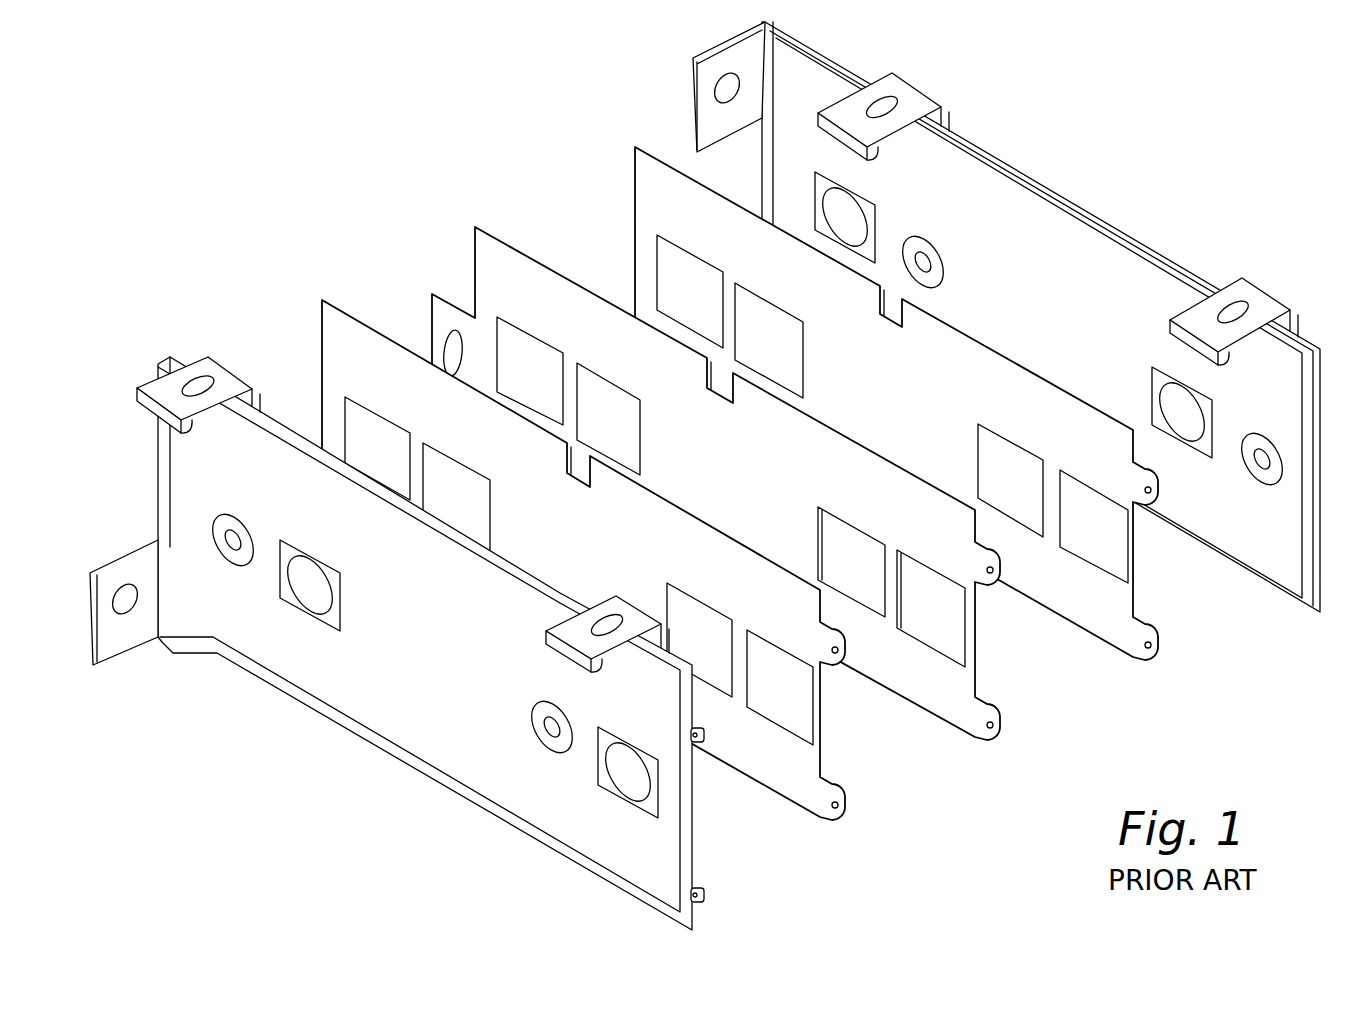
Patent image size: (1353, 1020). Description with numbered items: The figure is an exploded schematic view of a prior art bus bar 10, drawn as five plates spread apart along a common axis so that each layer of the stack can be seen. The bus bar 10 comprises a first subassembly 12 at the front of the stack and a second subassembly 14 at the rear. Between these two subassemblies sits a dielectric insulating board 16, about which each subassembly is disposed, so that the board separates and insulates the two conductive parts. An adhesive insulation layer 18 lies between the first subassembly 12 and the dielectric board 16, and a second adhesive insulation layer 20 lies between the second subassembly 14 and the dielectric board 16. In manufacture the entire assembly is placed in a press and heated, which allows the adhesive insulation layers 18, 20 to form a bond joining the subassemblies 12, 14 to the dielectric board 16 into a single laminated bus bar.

The bus bar 10 is at (705, 476).
The first subassembly 12 is at (390, 693).
The second subassembly 14 is at (1062, 250).
The dielectric insulating board 16 is at (940, 698).
The adhesive insulation layer 18 is at (790, 773).
The adhesive insulation layer 20 is at (1105, 610).